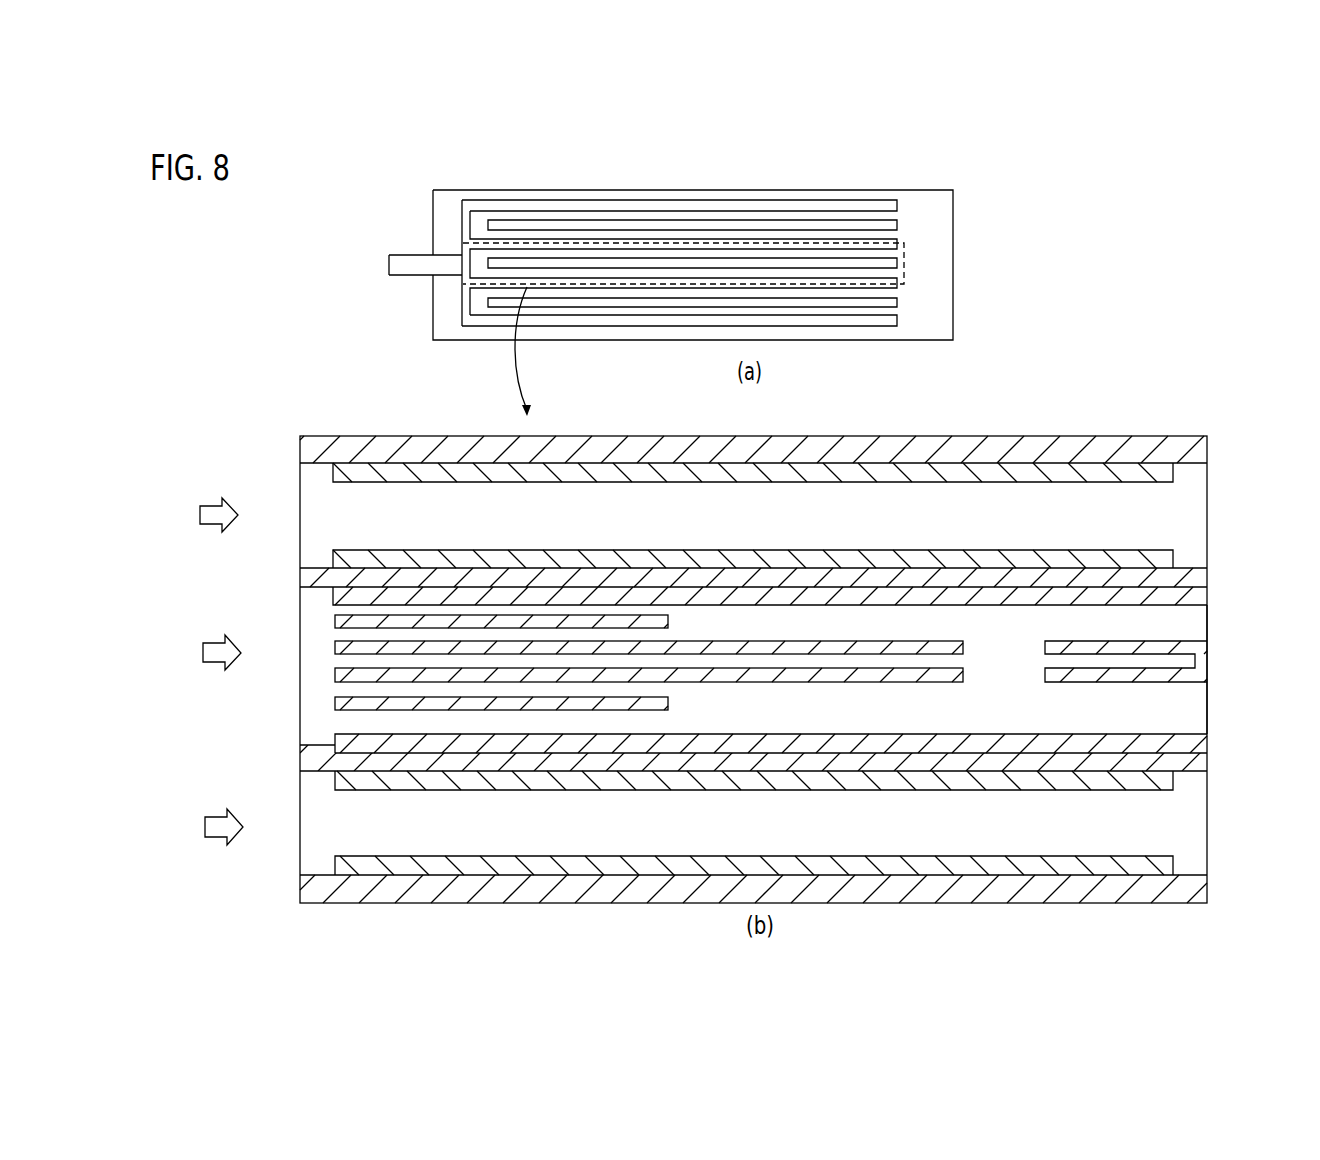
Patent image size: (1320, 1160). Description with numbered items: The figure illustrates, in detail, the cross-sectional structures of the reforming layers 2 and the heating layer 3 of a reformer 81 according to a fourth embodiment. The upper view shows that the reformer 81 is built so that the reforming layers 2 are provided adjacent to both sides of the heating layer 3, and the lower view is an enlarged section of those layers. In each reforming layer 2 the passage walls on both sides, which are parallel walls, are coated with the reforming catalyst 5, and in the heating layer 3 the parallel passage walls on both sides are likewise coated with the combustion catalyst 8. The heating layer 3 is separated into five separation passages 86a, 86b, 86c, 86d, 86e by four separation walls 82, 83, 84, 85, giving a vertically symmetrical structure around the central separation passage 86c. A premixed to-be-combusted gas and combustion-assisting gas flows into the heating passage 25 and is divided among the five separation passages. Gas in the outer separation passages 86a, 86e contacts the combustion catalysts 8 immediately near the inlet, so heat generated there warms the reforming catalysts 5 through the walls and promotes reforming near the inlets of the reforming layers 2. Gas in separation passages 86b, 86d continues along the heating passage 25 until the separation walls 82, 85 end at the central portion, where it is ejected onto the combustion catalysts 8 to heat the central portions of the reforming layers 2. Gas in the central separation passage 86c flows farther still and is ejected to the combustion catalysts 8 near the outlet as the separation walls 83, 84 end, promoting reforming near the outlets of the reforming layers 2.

The reforming layer 2 is at (812, 203).
The heating layer 3 is at (886, 228).
The reforming catalyst 5 is at (1173, 478).
The combustion catalyst 8 is at (1198, 594).
The heating passage 25 is at (228, 677).
The reformer 81 is at (975, 203).
The separation wall 82 is at (669, 703).
The separation wall 83 is at (803, 684).
The separation wall 84 is at (807, 641).
The separation wall 85 is at (669, 622).
The separation passage 86a is at (338, 718).
The separation passage 86b is at (338, 690).
The separation passage 86c is at (338, 662).
The separation passage 86d is at (338, 637).
The separation passage 86e is at (338, 609).